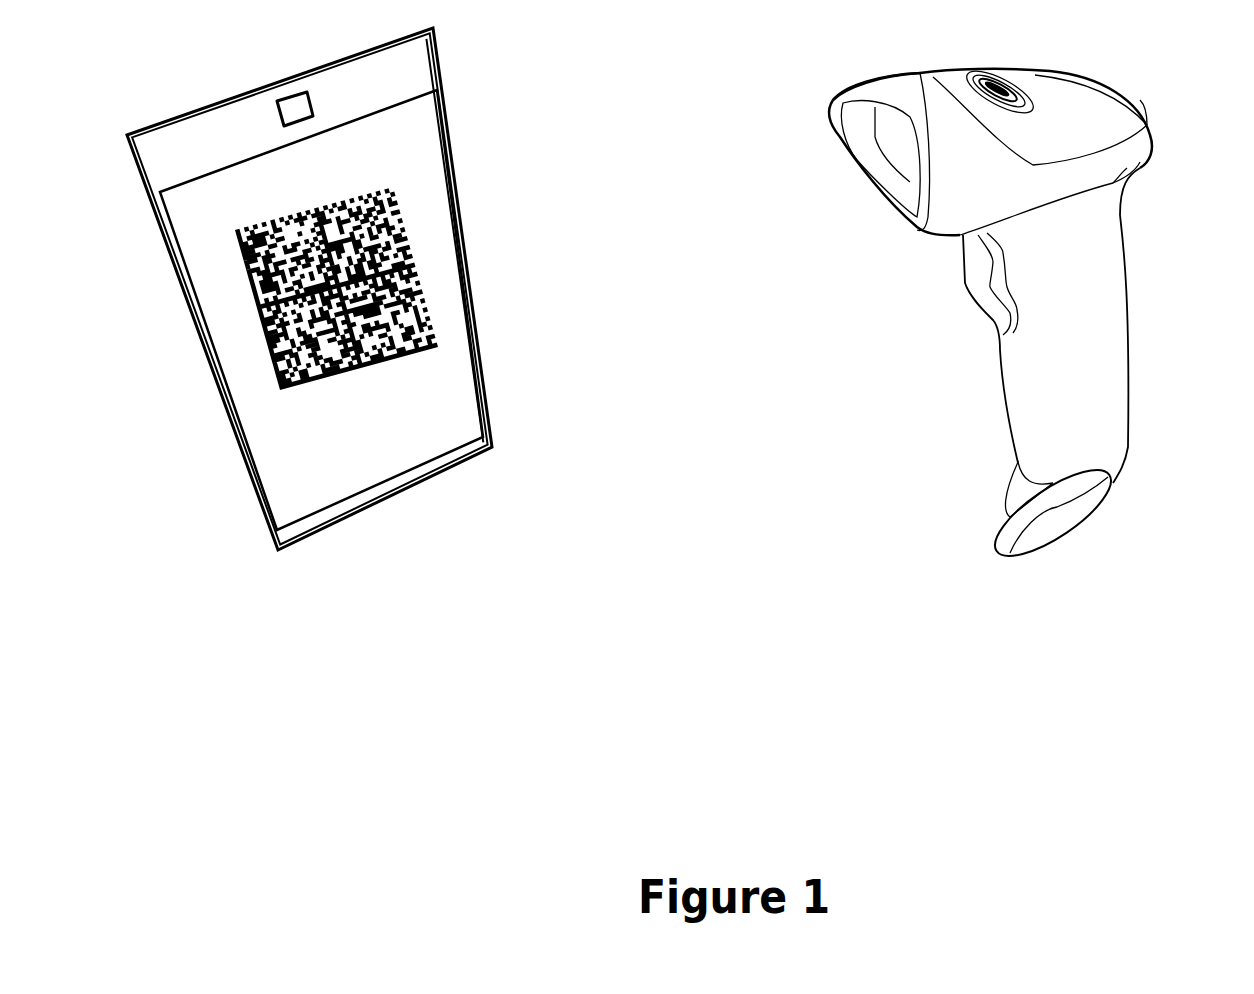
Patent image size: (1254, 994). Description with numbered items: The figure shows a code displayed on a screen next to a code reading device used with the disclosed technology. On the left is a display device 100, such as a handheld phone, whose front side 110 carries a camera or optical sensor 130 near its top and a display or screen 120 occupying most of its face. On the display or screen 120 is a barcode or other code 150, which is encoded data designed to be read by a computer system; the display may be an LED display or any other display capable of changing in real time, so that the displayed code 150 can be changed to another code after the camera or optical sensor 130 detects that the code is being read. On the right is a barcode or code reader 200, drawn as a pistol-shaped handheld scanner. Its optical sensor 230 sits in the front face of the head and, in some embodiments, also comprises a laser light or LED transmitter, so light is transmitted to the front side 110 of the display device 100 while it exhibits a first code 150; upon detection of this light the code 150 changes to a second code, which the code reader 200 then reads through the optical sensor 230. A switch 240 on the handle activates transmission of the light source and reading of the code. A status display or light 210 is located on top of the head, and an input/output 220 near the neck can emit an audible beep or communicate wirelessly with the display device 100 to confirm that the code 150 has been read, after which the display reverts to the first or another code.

The display device 100 is at (336, 317).
The front side 110 is at (433, 68).
The display or screen 120 is at (343, 473).
The camera or optical sensor 130 is at (275, 83).
The barcode or code 150 is at (397, 362).
The barcode or code reader 200 is at (1001, 317).
The status display or light 210 is at (1007, 75).
The input/output 220 is at (1133, 183).
The optical sensor 230 is at (883, 140).
The switch 240 is at (983, 290).